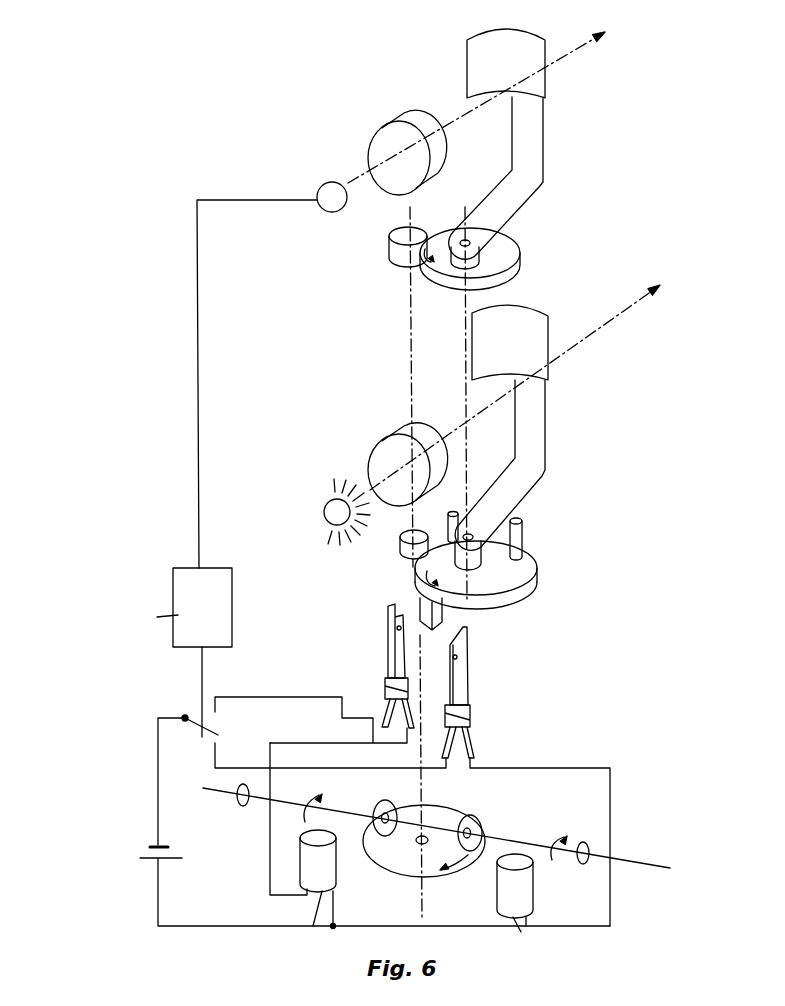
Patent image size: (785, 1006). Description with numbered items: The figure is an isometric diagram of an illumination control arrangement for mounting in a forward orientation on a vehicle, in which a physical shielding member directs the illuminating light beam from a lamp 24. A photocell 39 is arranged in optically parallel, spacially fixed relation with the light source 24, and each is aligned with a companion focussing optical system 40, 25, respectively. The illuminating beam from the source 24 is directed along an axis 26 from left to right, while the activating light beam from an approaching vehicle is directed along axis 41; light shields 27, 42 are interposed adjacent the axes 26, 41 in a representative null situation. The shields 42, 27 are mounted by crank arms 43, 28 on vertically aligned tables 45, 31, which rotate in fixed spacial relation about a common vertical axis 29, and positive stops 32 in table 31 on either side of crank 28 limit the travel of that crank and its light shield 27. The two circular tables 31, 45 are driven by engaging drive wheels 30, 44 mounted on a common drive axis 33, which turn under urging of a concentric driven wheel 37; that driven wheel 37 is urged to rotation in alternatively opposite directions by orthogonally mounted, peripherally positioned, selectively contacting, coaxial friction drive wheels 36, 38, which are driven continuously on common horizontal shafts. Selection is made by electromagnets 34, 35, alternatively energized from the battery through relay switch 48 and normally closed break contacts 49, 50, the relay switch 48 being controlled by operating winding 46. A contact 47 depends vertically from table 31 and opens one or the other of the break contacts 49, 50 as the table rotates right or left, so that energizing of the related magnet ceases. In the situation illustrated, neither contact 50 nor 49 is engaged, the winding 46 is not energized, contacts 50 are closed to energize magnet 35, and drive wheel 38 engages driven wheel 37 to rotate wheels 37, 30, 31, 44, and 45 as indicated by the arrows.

The lamp 24 is at (330, 511).
The focussing optical system 25 is at (390, 436).
The axis 26 is at (518, 381).
The light shield 27 is at (546, 322).
The crank arm 28 is at (532, 441).
The common vertical axis 29 is at (467, 610).
The drive wheel 30 is at (402, 553).
The table 31 is at (530, 567).
The positive stops 32 is at (522, 531).
The common drive axis 33 is at (436, 857).
The electromagnet 34 is at (335, 882).
The electromagnet 35 is at (534, 899).
The friction drive wheel 36 is at (383, 804).
The driven wheel 37 is at (437, 874).
The friction drive wheel 38 is at (473, 825).
The photocell 39 is at (329, 198).
The focussing optical system 40 is at (392, 121).
The axis 41 is at (493, 98).
The light shield 42 is at (538, 52).
The crank arm 43 is at (532, 158).
The drive wheel 44 is at (398, 246).
The table 45 is at (510, 253).
The operating winding 46 is at (223, 603).
The contact 47 is at (424, 622).
The relay switch 48 is at (212, 736).
The break contact 49 is at (389, 662).
The break contact 50 is at (473, 675).